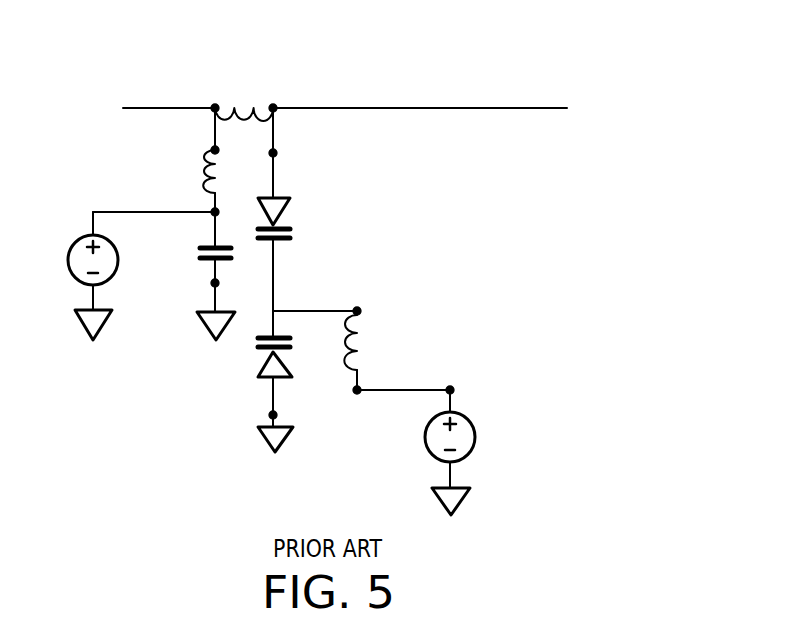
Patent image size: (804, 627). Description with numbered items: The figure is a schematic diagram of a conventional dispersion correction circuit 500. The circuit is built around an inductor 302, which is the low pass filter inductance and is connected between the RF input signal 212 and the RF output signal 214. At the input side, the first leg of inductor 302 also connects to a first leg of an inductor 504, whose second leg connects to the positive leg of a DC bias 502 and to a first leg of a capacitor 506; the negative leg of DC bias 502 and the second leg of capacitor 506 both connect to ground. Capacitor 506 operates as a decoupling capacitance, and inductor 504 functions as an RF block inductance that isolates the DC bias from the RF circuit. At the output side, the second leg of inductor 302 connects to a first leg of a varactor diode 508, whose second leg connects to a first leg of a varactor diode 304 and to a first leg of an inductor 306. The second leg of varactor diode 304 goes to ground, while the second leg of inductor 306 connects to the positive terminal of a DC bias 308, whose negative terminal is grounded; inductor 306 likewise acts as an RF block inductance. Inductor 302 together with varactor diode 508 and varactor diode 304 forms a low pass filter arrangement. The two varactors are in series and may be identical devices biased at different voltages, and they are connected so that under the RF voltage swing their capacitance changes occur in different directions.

The dispersion correction circuit 500 is at (650, 52).
The inductor 302 is at (255, 98).
The signal 212 is at (172, 110).
The signal 214 is at (487, 110).
The inductor 504 is at (202, 181).
The capacitor 506 is at (202, 256).
The DC bias 502 is at (82, 236).
The varactor diode 508 is at (286, 197).
The inductor 306 is at (365, 330).
The varactor diode 304 is at (262, 368).
The DC bias 308 is at (427, 439).